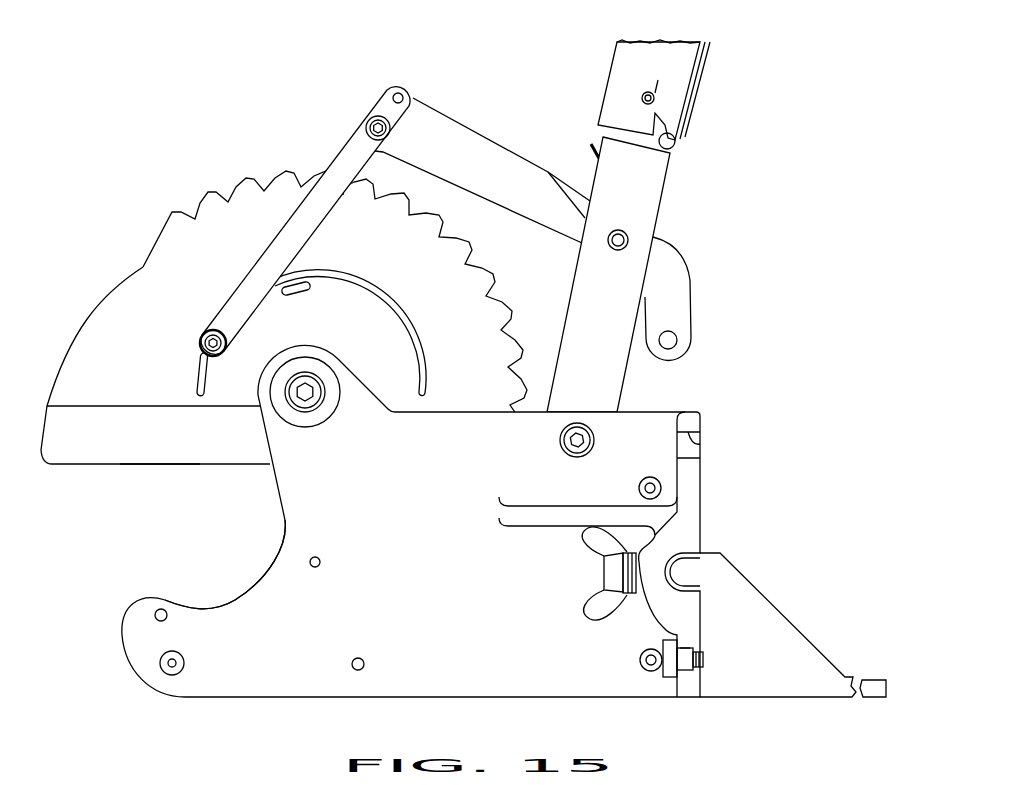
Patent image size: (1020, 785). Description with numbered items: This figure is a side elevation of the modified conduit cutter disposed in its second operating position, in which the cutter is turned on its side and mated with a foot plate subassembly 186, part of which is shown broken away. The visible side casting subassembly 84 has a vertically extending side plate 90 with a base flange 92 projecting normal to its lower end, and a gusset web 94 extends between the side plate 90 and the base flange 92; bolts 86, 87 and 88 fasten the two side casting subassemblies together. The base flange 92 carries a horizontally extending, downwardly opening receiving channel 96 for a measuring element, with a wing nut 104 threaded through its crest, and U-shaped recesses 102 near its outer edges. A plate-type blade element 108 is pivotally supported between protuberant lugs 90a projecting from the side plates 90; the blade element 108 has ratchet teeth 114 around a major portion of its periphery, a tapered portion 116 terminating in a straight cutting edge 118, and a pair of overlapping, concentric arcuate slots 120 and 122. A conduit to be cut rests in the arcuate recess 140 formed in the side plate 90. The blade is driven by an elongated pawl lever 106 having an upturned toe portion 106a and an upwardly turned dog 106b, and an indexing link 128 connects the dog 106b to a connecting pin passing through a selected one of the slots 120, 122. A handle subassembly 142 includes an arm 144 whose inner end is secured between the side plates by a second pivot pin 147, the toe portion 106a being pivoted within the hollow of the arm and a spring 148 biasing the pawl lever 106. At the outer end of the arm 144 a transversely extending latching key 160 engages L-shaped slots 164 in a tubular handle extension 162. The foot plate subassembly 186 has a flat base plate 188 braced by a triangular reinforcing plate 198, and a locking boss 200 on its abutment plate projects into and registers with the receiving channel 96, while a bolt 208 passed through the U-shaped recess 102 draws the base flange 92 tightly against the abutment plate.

The side casting subassembly 84 is at (279, 665).
The bolt 86 is at (639, 659).
The bolt 87 is at (639, 488).
The bolt 88 is at (170, 676).
The side plate 90 is at (407, 570).
The protuberant lug 90a is at (352, 385).
The base flange 92 is at (692, 488).
The gusset web 94 is at (545, 518).
The receiving channel 96 is at (660, 589).
The U-shaped recess 102 is at (700, 437).
The wing nut 104 is at (592, 608).
The pawl lever 106 is at (500, 179).
The upturned toe portion 106a is at (670, 297).
The upwardly turned dog 106b is at (368, 103).
The blade element 108 is at (135, 296).
The ratchet teeth 114 is at (252, 172).
The tapered portion 116 is at (160, 452).
The straight cutting edge 118 is at (155, 466).
The arcuate slot 120 is at (350, 282).
The arcuate slot 122 is at (291, 294).
The indexing link 128 is at (342, 163).
The arcuate recess 140 is at (243, 597).
The handle subassembly 142 is at (588, 110).
The arm 144 is at (614, 322).
The second pivot pin 147 is at (559, 440).
The spring 148 is at (547, 170).
The latching key 160 is at (646, 92).
The handle extension 162 is at (670, 62).
The L-shaped slot 164 is at (672, 149).
The foot plate subassembly 186 is at (805, 618).
The base plate 188 is at (870, 683).
The triangular reinforcing plate 198 is at (745, 625).
The locking boss 200 is at (683, 577).
The bolt 208 is at (685, 662).